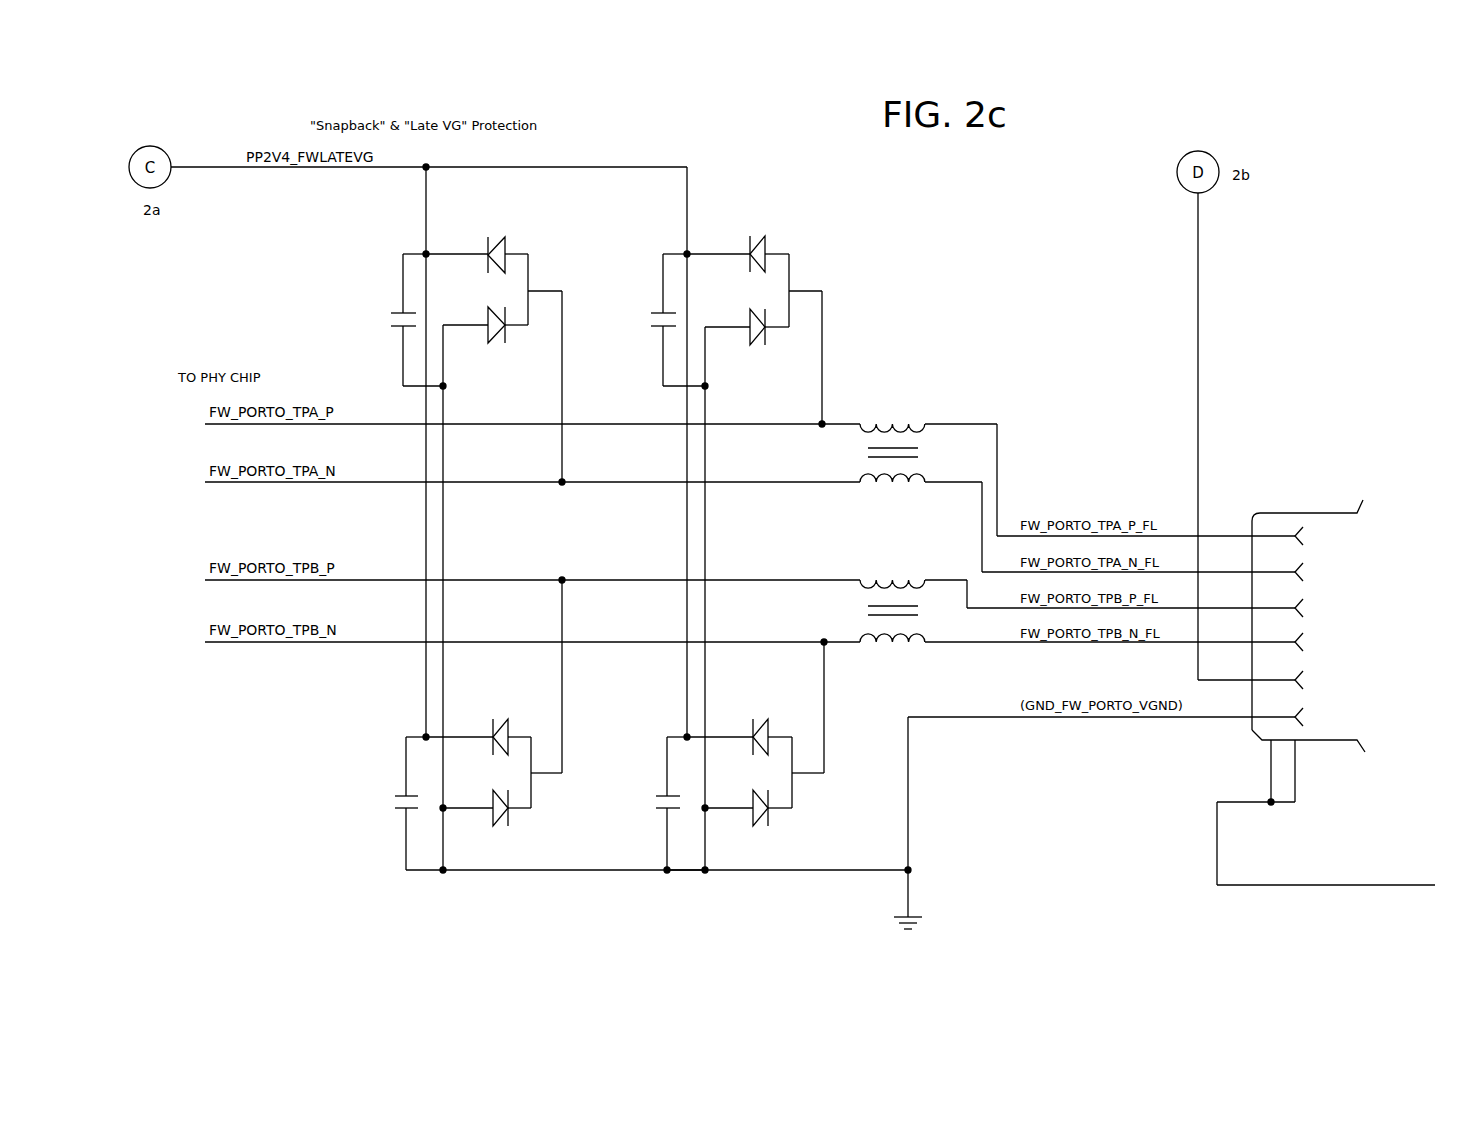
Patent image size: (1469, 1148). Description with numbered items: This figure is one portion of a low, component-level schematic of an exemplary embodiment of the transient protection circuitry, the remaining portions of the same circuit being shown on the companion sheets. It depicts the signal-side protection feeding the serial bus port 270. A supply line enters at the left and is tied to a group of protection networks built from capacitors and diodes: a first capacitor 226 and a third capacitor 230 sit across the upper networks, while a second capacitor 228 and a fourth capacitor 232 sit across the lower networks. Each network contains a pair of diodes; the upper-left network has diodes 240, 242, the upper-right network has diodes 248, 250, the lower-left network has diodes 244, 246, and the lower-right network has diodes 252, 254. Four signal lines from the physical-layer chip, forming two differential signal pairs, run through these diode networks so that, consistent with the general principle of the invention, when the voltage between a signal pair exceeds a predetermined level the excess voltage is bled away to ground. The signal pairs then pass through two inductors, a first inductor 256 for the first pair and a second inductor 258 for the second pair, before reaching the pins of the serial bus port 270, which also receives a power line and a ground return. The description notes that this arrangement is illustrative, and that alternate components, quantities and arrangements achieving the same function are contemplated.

The capacitor 226 is at (389, 277).
The capacitor 228 is at (392, 758).
The capacitor 230 is at (650, 278).
The capacitor 232 is at (652, 758).
The diode 240 is at (512, 248).
The diode 242 is at (493, 350).
The diode 244 is at (515, 727).
The diode 246 is at (500, 833).
The diode 248 is at (773, 248).
The diode 250 is at (757, 350).
The diode 252 is at (777, 727).
The diode 254 is at (760, 833).
The inductor 256 is at (925, 413).
The inductor 258 is at (863, 570).
The serial bus port 270 is at (1262, 512).